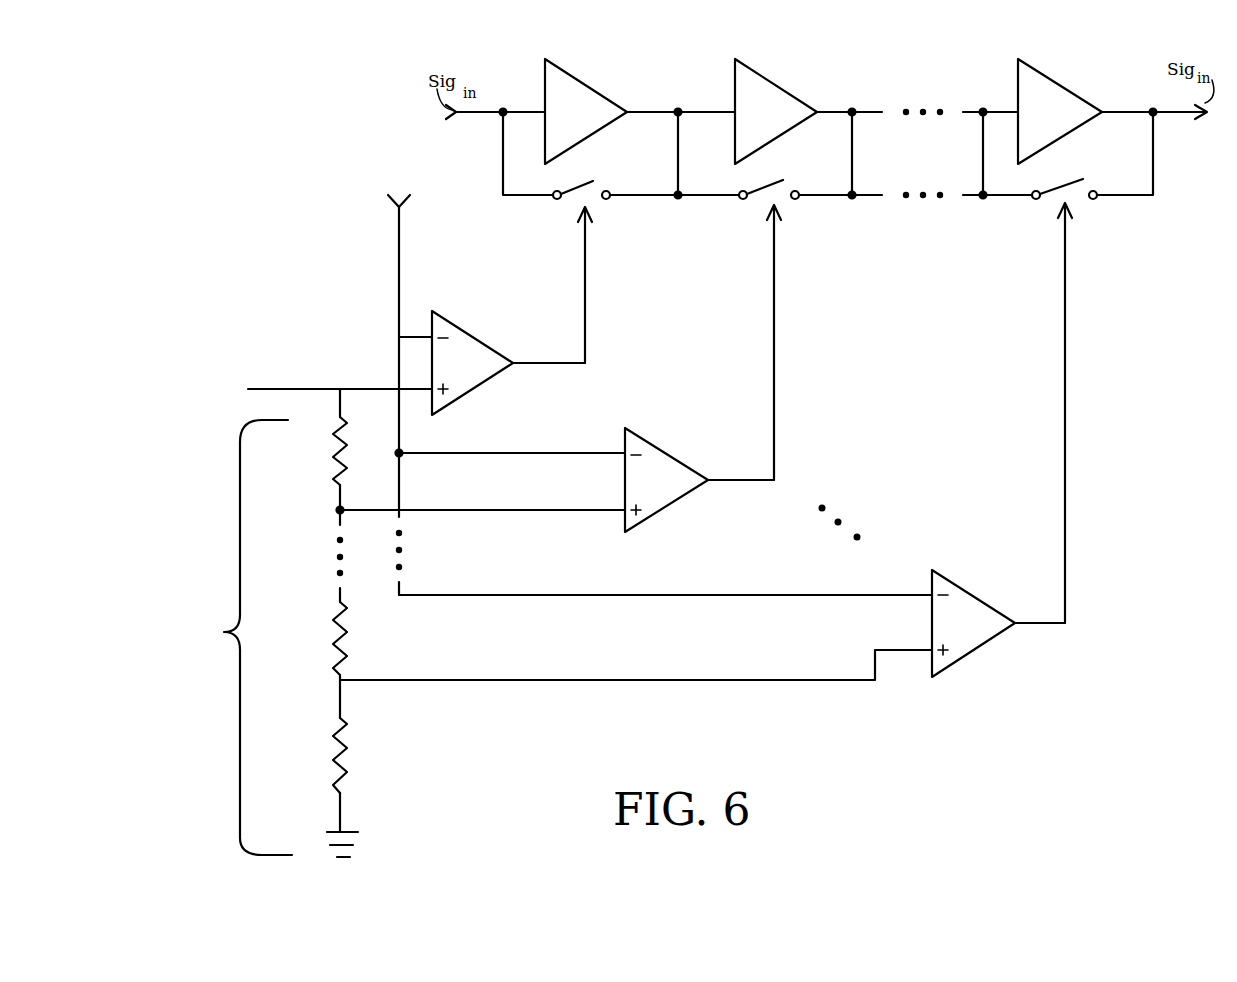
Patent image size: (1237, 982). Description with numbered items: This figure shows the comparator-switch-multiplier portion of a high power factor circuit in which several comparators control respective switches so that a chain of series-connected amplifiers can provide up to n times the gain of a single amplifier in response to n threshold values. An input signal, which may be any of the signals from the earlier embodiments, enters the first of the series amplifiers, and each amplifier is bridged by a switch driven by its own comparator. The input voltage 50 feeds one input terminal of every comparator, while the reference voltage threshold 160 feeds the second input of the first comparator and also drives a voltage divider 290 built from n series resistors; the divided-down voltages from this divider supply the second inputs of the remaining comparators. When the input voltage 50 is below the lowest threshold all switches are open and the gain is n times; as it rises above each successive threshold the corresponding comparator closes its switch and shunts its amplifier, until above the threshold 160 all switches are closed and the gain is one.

The input voltage 50 is at (398, 163).
The reference voltage threshold 160 is at (302, 355).
The voltage divider 290 is at (273, 623).